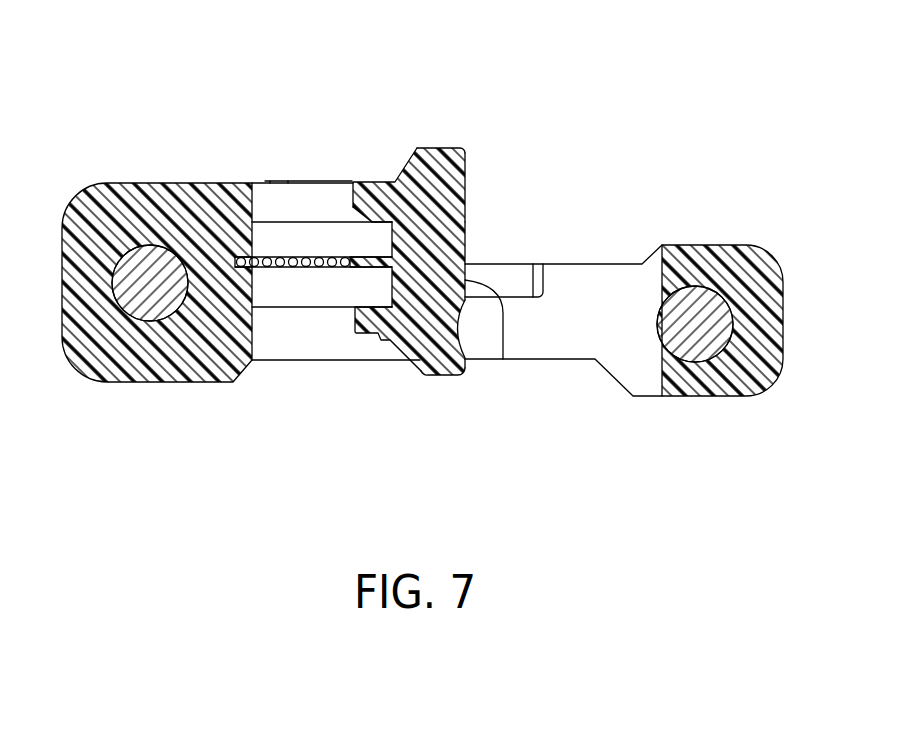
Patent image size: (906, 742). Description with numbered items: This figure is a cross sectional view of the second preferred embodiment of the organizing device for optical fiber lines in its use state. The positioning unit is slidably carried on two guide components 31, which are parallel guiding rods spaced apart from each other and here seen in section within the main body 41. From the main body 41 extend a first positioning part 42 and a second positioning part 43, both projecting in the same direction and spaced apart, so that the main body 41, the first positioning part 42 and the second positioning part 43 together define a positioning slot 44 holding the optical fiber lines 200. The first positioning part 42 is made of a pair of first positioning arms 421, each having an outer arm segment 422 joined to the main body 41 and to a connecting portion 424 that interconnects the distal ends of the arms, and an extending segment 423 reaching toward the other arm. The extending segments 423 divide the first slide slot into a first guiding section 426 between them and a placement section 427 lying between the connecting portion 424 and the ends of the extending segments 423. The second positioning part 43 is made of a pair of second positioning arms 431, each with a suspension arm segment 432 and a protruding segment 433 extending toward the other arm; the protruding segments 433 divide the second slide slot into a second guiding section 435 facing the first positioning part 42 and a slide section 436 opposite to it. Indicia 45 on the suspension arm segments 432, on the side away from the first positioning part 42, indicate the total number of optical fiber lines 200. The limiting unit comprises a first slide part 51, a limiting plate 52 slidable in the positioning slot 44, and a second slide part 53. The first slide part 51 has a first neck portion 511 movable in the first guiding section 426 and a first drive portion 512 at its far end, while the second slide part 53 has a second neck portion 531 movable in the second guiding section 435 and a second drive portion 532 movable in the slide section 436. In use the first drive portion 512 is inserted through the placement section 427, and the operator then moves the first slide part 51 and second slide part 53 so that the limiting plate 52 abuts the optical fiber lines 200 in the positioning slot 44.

The guide component 31 is at (155, 312).
The main body 41 is at (157, 264).
The first positioning part 42 is at (457, 349).
The second positioning part 43 is at (376, 212).
The positioning slot 44 is at (272, 300).
The indicia 45 is at (270, 183).
The first slide part 51 is at (442, 385).
The limiting plate 52 is at (452, 254).
The second slide part 53 is at (456, 216).
The optical fiber lines 200 is at (295, 267).
The first positioning arm 421 is at (308, 372).
The outer arm segment 422 is at (557, 359).
The extending segment 423 is at (547, 286).
The connecting portion 424 is at (757, 382).
The first guiding section 426 is at (507, 280).
The placement section 427 is at (623, 277).
The second positioning arm 431 is at (216, 155).
The suspension arm segment 432 is at (257, 183).
The protruding segment 433 is at (313, 183).
The second guiding section 435 is at (373, 240).
The slide section 436 is at (342, 183).
The first neck portion 511 is at (503, 359).
The first drive portion 512 is at (453, 378).
The second neck portion 531 is at (468, 256).
The second drive portion 532 is at (435, 147).